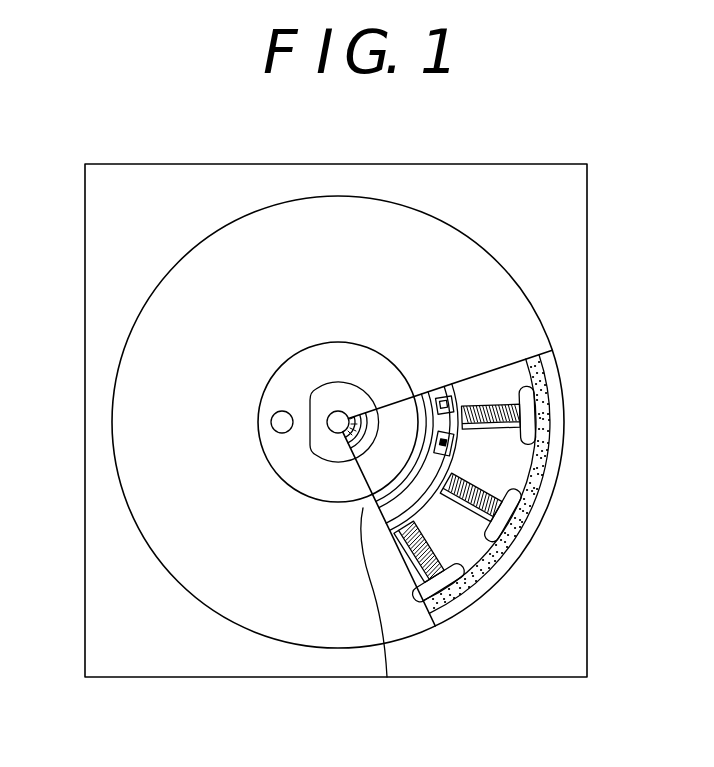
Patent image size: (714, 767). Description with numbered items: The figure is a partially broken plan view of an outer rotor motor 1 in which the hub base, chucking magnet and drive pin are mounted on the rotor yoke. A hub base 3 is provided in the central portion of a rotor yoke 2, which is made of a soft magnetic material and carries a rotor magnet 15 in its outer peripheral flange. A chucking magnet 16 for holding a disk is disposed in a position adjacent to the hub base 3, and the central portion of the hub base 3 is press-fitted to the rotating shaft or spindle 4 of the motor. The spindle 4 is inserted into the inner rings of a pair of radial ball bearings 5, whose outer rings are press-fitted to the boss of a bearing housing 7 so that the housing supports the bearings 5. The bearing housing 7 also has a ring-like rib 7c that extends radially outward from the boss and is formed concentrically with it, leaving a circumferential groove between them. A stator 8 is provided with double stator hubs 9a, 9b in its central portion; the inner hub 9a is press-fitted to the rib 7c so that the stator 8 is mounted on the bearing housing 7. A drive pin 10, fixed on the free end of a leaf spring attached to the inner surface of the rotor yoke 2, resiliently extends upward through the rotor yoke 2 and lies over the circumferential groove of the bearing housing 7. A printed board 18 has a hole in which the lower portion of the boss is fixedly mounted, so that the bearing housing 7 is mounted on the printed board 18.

The motor 1 is at (523, 267).
The rotor yoke 2 is at (158, 307).
The hub base 3 is at (323, 397).
The spindle 4 is at (338, 422).
The radial ball bearing 5 is at (358, 425).
The bearing housing 7 is at (395, 417).
The ring-like rib 7c is at (379, 617).
The stator 8 is at (500, 398).
The inner stator hub 9a is at (430, 453).
The outer stator hub 9b is at (453, 445).
The drive pin 10 is at (270, 423).
The rotor magnet 15 is at (470, 593).
The chucking magnet 16 is at (302, 478).
The printed board 18 is at (577, 301).